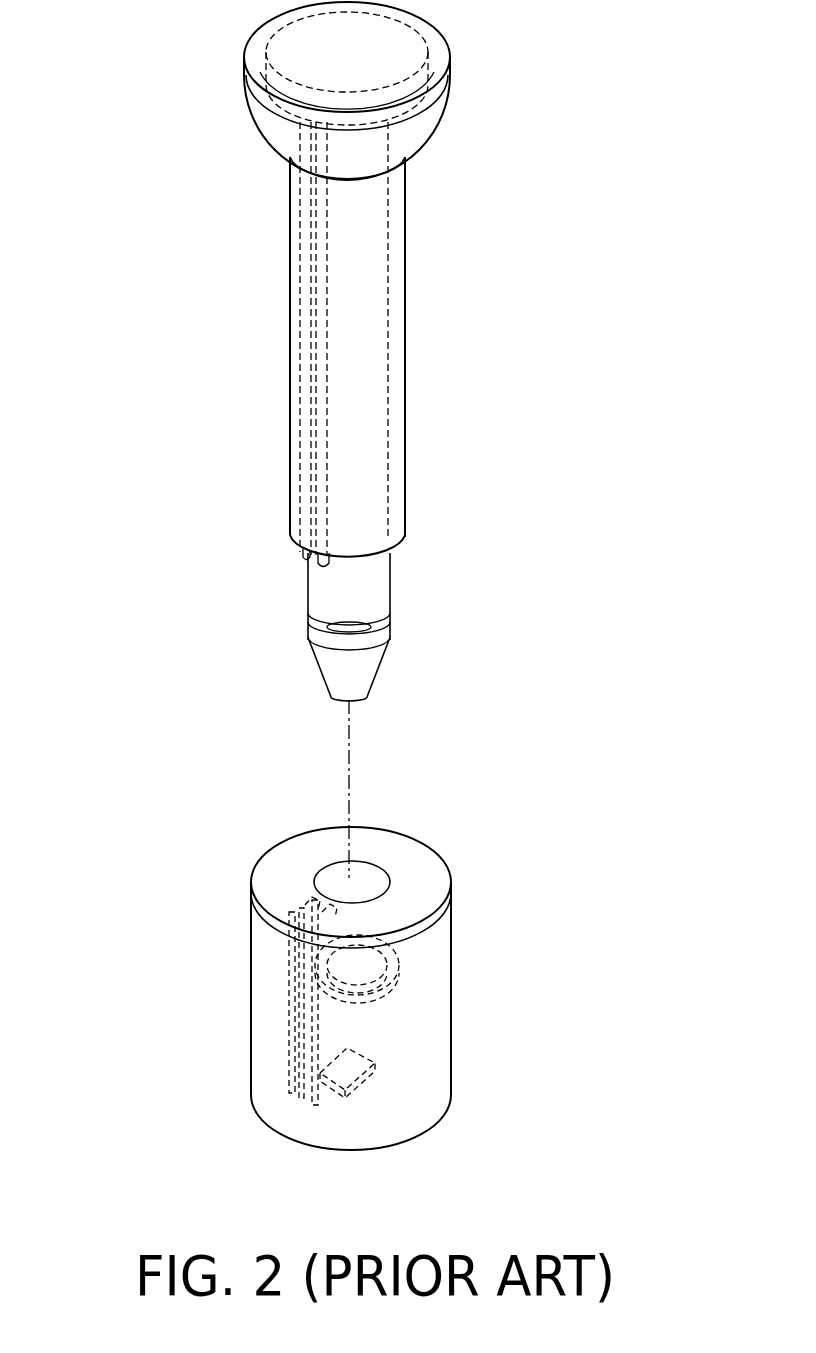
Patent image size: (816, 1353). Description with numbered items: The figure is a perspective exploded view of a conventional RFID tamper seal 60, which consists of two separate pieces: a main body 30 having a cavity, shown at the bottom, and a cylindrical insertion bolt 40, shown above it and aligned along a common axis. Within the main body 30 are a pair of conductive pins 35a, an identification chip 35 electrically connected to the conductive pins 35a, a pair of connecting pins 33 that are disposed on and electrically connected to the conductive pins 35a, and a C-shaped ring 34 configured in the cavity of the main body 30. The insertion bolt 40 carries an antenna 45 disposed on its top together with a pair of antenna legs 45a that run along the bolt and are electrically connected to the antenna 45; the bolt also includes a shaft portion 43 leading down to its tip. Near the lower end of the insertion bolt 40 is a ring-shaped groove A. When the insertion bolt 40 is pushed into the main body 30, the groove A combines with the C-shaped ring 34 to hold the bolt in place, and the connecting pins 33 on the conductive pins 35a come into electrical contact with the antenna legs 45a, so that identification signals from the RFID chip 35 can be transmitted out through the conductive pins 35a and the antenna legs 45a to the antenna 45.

The main body 30 is at (411, 986).
The connecting pins 33 is at (340, 895).
The C-shaped ring 34 is at (400, 965).
The identification chip 35 is at (252, 1001).
The conductive pins 35a is at (290, 962).
The insertion bolt 40 is at (366, 440).
The punch shaft 43 is at (405, 260).
The antenna 45 is at (282, 77).
The antenna legs 45a is at (307, 357).
The tamper seal 60 is at (83, 203).
The ring-shaped groove A is at (365, 632).